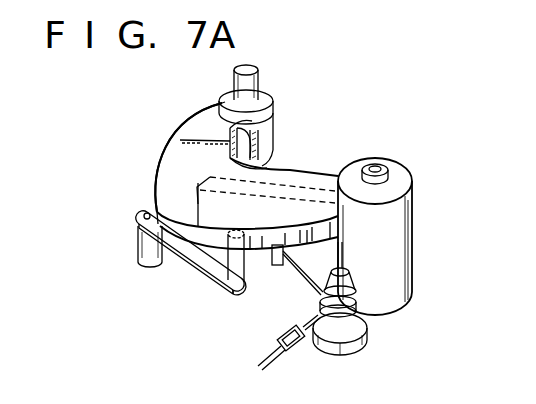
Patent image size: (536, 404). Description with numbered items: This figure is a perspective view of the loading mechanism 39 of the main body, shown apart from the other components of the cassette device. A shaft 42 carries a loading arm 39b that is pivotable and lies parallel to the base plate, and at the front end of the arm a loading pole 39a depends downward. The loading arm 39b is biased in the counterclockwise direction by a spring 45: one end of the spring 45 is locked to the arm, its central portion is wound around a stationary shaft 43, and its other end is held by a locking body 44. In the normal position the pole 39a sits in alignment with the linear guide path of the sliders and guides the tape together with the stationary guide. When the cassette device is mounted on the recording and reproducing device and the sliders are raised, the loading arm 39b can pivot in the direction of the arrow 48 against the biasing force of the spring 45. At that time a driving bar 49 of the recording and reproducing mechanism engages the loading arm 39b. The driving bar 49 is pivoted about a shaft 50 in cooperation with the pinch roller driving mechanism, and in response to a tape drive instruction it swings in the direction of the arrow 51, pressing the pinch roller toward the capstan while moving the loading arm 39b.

The loading mechanism 39 is at (180, 126).
The loading pole 39a is at (263, 153).
The loading arm 39b is at (173, 163).
The shaft 42 is at (378, 163).
The stationary shaft 43 is at (353, 348).
The locking body 44 is at (277, 338).
The spring 45 is at (286, 262).
The arrow 48 is at (318, 77).
The driving bar 49 is at (186, 265).
The shaft 50 is at (136, 255).
The arrow 51 is at (221, 292).